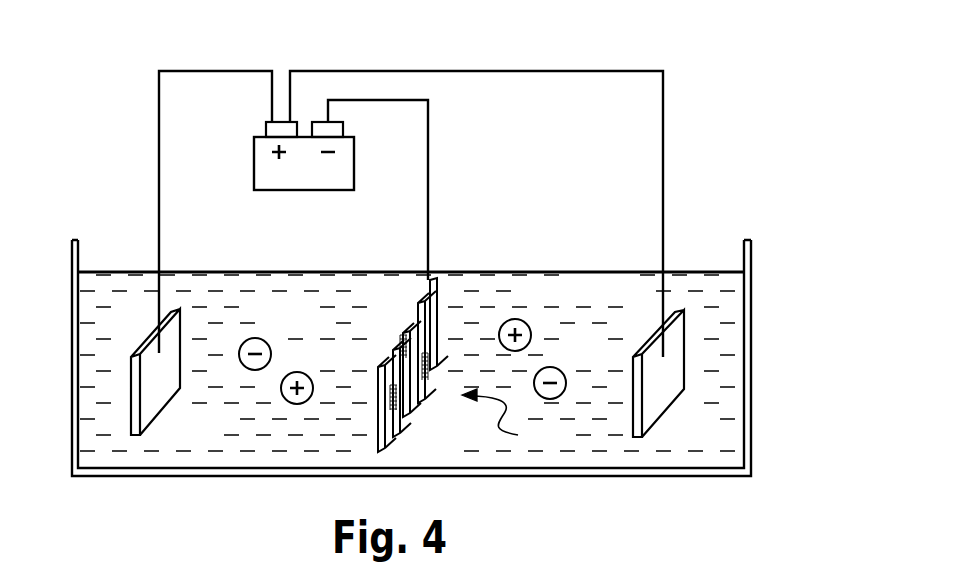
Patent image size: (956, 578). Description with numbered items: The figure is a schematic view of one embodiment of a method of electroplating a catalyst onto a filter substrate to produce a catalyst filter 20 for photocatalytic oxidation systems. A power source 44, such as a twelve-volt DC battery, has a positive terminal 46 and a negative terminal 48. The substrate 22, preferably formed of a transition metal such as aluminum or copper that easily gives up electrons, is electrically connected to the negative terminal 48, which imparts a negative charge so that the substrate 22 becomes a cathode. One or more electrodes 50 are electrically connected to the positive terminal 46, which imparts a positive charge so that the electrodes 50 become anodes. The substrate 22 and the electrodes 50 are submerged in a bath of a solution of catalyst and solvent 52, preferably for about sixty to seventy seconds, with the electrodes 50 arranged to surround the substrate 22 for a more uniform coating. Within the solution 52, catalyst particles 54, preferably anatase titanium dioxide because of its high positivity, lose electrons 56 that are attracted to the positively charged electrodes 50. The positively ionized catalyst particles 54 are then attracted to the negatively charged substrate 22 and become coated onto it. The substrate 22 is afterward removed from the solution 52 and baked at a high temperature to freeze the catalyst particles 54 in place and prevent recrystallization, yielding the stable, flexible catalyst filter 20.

The catalyst filter 20 is at (506, 418).
The substrate 22 is at (415, 403).
The power source 44 is at (290, 180).
The positive terminal 46 is at (277, 130).
The negative terminal 48 is at (340, 131).
The electrodes 50 is at (152, 407).
The solution of catalyst and solvent 52 is at (618, 292).
The catalyst particles 54 is at (308, 373).
The electrons 56 is at (263, 338).